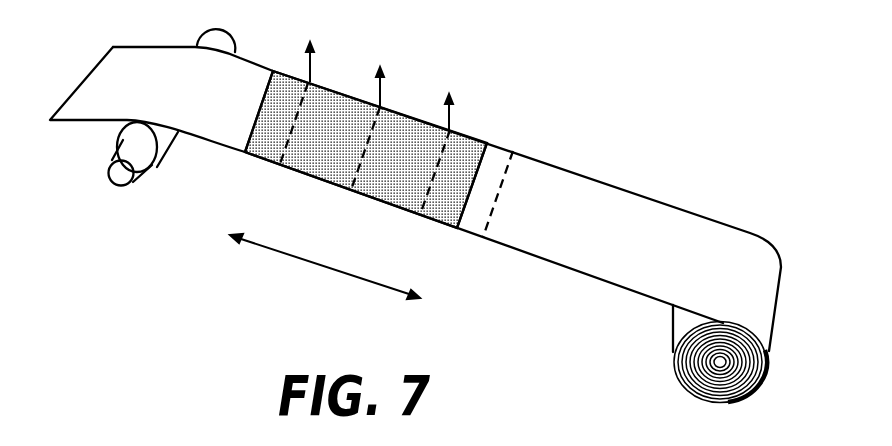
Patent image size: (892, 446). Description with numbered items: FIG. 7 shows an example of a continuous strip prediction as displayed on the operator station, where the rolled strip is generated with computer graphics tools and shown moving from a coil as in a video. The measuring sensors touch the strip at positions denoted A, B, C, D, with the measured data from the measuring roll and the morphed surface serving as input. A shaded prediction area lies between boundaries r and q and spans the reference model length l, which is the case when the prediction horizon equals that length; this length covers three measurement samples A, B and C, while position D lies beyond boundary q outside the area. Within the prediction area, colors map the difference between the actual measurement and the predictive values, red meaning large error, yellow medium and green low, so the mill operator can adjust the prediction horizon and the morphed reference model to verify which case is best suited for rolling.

The leading boundary position of coated region r is at (253, 131).
The measurement sample position A is at (286, 143).
The measurement sample position B is at (357, 167).
The measurement sample position C is at (428, 190).
The trailing boundary position of coated region q is at (465, 205).
The measurement sample position D is at (492, 213).
The length of the reference model l is at (325, 267).